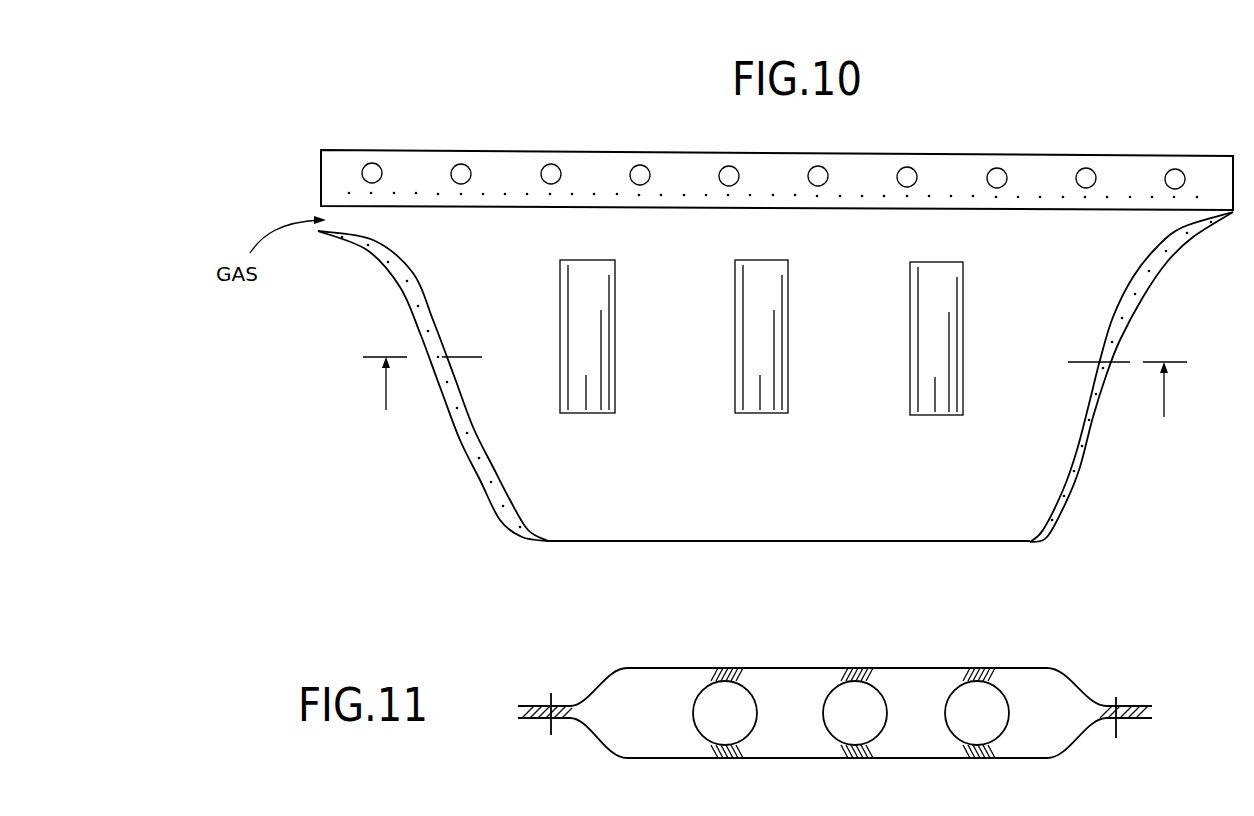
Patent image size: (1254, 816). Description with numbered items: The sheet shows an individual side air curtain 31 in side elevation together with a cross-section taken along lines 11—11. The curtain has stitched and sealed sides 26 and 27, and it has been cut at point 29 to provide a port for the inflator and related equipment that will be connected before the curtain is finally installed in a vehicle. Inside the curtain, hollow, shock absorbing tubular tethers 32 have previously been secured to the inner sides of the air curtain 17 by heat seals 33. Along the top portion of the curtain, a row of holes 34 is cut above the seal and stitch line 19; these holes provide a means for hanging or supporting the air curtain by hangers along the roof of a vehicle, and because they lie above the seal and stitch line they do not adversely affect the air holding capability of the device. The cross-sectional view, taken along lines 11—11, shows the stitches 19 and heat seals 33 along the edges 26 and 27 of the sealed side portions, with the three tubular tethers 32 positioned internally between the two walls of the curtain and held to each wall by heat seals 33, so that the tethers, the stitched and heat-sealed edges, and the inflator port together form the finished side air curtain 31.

In FIG. 10, the section line 11 is at (775, 401).
In FIG. 10, the bath / container 17 is at (690, 520).
In FIG. 11, the bath / container 17 is at (780, 662).
In FIG. 10, the seal and stitch line 19 is at (467, 458).
In FIG. 11, the seal and stitch line 19 is at (553, 697).
In FIG. 10, the stitched and sealed side 26 is at (1167, 265).
In FIG. 11, the stitched and sealed side 26 is at (1149, 737).
In FIG. 10, the stitched and sealed side 27 is at (487, 495).
In FIG. 11, the stitched and sealed side 27 is at (530, 737).
In FIG. 10, the cut point 29 is at (350, 215).
In FIG. 10, the side air curtain 31 is at (972, 133).
In FIG. 10, the tubular tether 32 is at (922, 415).
In FIG. 11, the tubular tether 32 is at (758, 711).
In FIG. 11, the heat seal 33 is at (538, 703).
In FIG. 10, the hole 34 is at (372, 163).